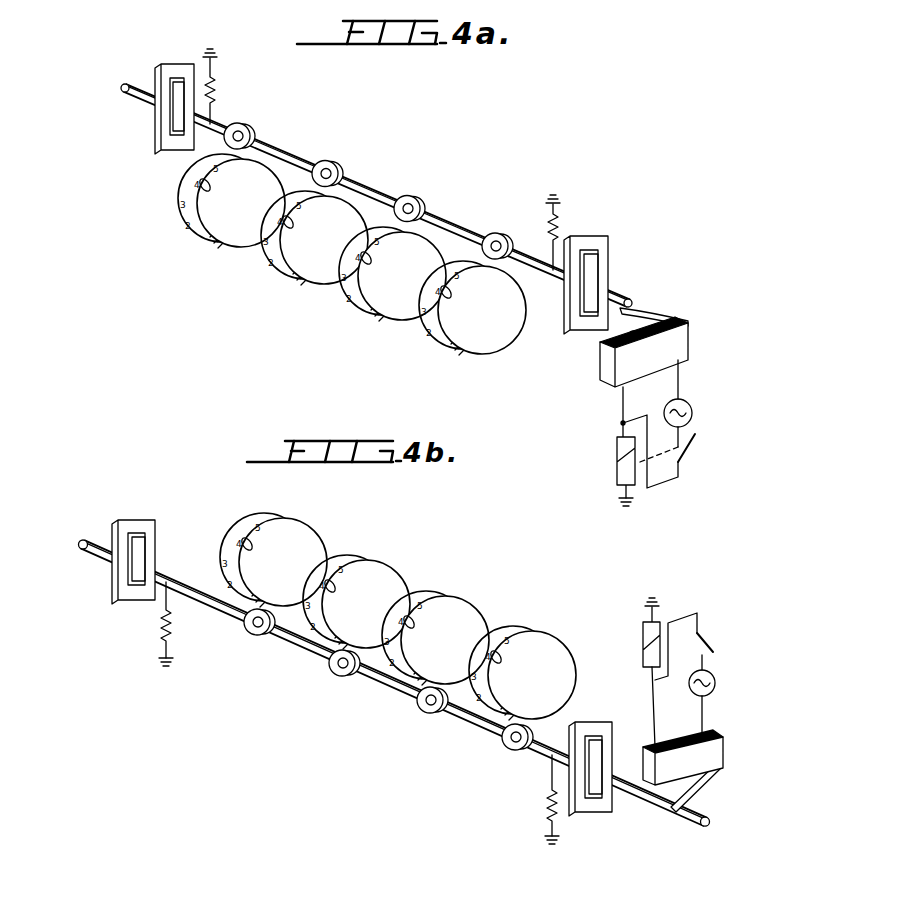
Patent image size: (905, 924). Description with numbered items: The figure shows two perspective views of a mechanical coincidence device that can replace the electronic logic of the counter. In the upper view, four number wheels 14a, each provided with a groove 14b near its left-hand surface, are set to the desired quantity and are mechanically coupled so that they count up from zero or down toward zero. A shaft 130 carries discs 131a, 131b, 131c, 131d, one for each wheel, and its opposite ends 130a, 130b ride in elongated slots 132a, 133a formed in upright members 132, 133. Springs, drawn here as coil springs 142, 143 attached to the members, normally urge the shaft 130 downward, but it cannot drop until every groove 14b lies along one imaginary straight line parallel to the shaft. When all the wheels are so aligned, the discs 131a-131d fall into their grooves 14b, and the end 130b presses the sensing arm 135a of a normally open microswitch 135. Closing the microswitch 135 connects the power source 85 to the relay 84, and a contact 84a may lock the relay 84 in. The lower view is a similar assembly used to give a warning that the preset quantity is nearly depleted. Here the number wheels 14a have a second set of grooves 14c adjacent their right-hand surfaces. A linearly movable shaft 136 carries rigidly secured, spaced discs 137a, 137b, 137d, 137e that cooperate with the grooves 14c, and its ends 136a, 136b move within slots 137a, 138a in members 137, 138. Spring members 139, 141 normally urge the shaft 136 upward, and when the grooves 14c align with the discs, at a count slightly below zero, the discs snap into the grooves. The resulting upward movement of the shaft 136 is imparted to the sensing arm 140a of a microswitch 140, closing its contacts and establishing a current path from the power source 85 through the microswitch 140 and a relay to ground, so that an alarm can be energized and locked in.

In FIG. 4A, the shaft 130 is at (353, 186).
In FIG. 4A, the shaft end 130a is at (140, 95).
In FIG. 4A, the shaft end 130b is at (636, 302).
In FIG. 4A, the disc 131a is at (501, 232).
In FIG. 4A, the disc 131b is at (421, 203).
In FIG. 4A, the disc 131c is at (334, 162).
In FIG. 4A, the disc 131d is at (248, 125).
In FIG. 4A, the member 132 is at (138, 96).
In FIG. 4A, the elongated slot 132a is at (172, 123).
In FIG. 4A, the member 133 is at (597, 301).
In FIG. 4A, the elongated slot 133a is at (575, 318).
In FIG. 4A, the microswitch 135 is at (690, 350).
In FIG. 4A, the sensing arm 135a is at (682, 315).
In FIG. 4A, the return spring 142 is at (218, 86).
In FIG. 4A, the return spring 143 is at (563, 225).
In FIG. 4A, the number wheel 14a is at (285, 280).
In FIG. 4B, the number wheel 14a is at (292, 535).
In FIG. 4A, the groove 14b is at (321, 251).
In FIG. 4B, the groove 14b is at (408, 601).
In FIG. 4B, the groove 14c is at (408, 601).
In FIG. 4A, the relay 84 is at (616, 465).
In FIG. 4A, the contact 84a is at (700, 447).
In FIG. 4A, the power source 85 is at (693, 416).
In FIG. 4B, the shaft 136 is at (634, 794).
In FIG. 4B, the shaft end 136a is at (97, 540).
In FIG. 4B, the shaft end 136b is at (712, 820).
In FIG. 4B, the member 137 is at (138, 520).
In FIG. 4B, the slot / disc 137a is at (142, 543).
In FIG. 4B, the disc 137b is at (425, 717).
In FIG. 4B, the disc 137d is at (252, 637).
In FIG. 4B, the bearing collar 137e is at (337, 679).
In FIG. 4B, the member 138 is at (601, 773).
In FIG. 4B, the slot 138a is at (600, 740).
In FIG. 4B, the spring member 139 is at (158, 626).
In FIG. 4B, the microswitch 140 is at (726, 750).
In FIG. 4B, the sensing arm 140a is at (718, 792).
In FIG. 4B, the spring member 141 is at (550, 802).